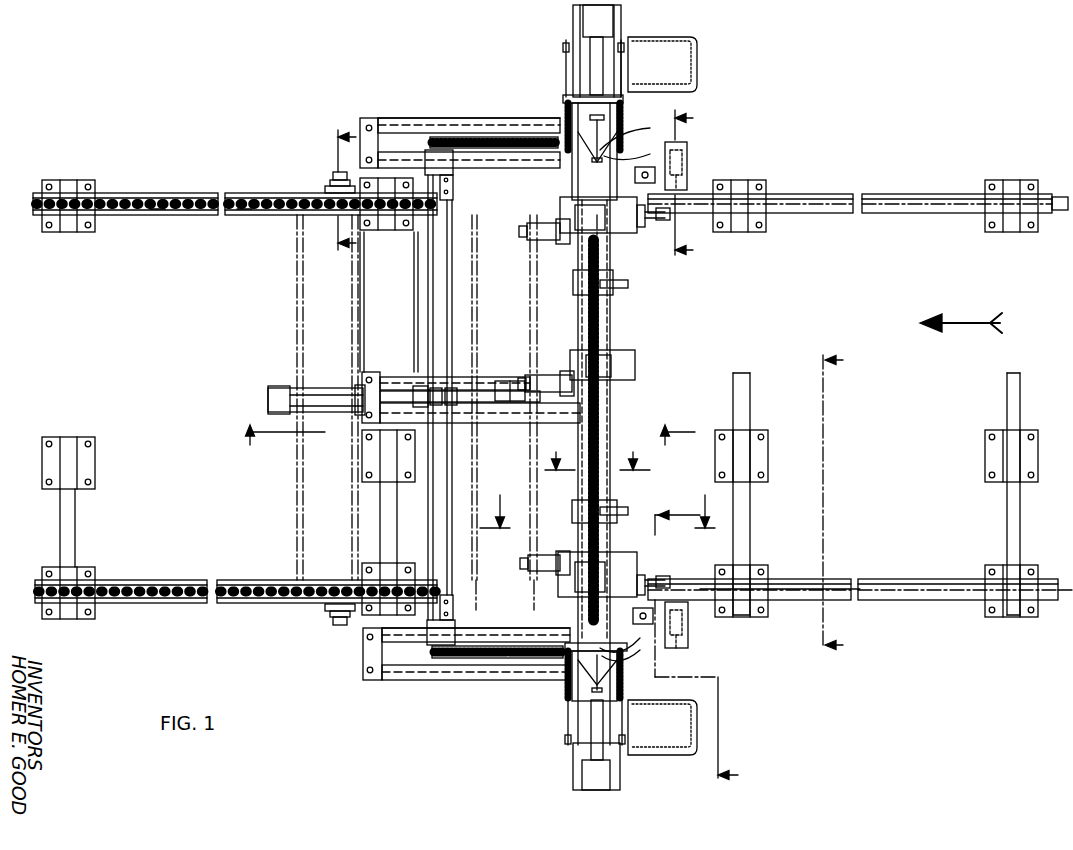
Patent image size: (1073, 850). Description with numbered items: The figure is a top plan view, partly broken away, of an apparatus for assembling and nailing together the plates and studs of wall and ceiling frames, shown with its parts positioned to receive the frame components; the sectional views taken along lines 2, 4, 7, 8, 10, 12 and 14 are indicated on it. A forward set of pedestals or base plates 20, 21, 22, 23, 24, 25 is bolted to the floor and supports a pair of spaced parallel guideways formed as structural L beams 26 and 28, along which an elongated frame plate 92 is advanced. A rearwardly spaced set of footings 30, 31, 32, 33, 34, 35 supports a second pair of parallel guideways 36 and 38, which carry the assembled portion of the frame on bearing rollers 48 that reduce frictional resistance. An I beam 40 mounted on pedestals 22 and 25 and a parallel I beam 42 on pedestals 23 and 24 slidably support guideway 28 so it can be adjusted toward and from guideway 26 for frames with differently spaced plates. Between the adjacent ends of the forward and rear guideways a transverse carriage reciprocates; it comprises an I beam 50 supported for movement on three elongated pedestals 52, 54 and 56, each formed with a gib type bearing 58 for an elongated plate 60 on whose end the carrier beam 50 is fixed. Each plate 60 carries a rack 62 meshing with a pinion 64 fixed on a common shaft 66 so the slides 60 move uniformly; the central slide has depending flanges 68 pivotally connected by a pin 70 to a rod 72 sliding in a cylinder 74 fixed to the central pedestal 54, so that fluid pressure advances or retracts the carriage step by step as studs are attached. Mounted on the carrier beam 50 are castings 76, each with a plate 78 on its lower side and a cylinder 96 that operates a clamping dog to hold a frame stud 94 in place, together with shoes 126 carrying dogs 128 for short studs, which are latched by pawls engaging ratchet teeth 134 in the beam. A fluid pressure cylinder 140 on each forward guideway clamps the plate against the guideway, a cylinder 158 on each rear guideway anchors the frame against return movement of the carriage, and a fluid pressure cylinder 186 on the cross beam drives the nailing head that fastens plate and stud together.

The pedestal 20 is at (758, 182).
The pedestal 21 is at (994, 178).
The pedestal 22 is at (990, 618).
The pedestal 23 is at (762, 620).
The pedestal 24 is at (768, 460).
The pedestal 25 is at (984, 456).
The guideway 26 is at (901, 190).
The guideway 28 is at (932, 606).
The footing 30 is at (52, 180).
The footing 31 is at (402, 230).
The footing 32 is at (90, 620).
The footing 33 is at (364, 565).
The footing 34 is at (97, 462).
The footing 35 is at (362, 464).
The rear guideway 36 is at (176, 196).
The rear guideway 38 is at (156, 580).
The I beam 40 is at (1006, 508).
The I beam 42 is at (750, 520).
The bearing roller 48 is at (169, 210).
The carriage beam 50 is at (580, 320).
The pedestal 52 is at (499, 124).
The central pedestal 54 is at (508, 388).
The pedestal 56 is at (492, 630).
The gib type bearing 58 is at (404, 122).
The plate 60 is at (423, 136).
The rack 62 is at (504, 148).
The pinion 64 is at (452, 150).
The shaft 66 is at (444, 255).
The depending flange 68 is at (492, 402).
The pin 70 is at (474, 383).
The rod 72 is at (398, 382).
The cylinder 74 is at (336, 388).
The casting 76 is at (632, 228).
The plate 78 is at (654, 218).
The frame plate 92 is at (936, 582).
The frame stud 94 is at (296, 292).
The cylinder 96 is at (526, 236).
The shoe 126 is at (572, 276).
The dog 128 is at (627, 286).
The ratchet teeth 134 is at (601, 329).
The fluid pressure cylinder 140 is at (688, 148).
The fluid pressure cylinder 158 is at (329, 182).
The fluid pressure cylinder 186 is at (588, 18).
The section line 2 is at (705, 645).
The section line 4 is at (469, 449).
The section line 7 is at (597, 503).
The section line 8 is at (692, 184).
The section line 10 is at (598, 451).
The section line 12 is at (335, 190).
The section line 14 is at (847, 502).